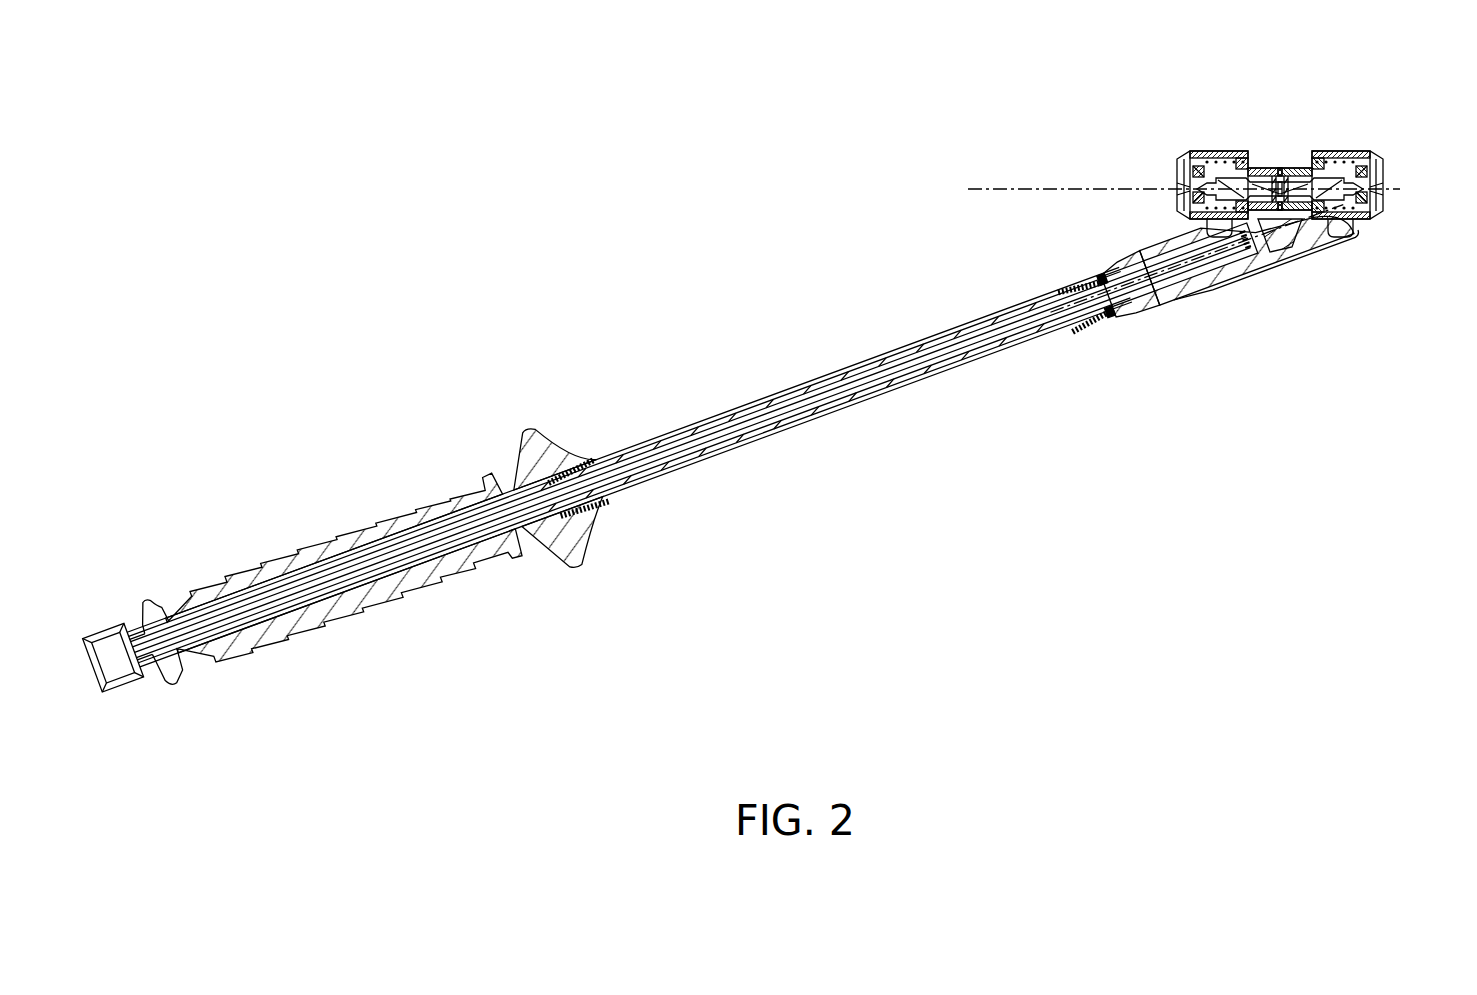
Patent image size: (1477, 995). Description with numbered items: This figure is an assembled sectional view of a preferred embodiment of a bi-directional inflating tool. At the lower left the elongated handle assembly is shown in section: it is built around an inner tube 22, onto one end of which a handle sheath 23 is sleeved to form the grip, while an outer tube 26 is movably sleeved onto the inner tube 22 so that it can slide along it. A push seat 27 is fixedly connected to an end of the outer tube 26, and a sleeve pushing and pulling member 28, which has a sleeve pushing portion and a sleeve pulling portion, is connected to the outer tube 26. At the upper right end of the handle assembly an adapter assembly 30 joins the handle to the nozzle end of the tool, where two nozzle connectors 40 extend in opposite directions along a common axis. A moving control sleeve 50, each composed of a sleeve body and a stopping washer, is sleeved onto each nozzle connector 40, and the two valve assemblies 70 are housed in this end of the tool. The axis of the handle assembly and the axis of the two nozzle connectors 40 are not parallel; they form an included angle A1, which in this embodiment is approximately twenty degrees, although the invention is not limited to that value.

The inner tube 22 is at (1152, 306).
The handle sheath 23 is at (356, 540).
The outer tube 26 is at (933, 393).
The push seat 27 is at (553, 462).
The sleeve pushing and pulling member 28 is at (1230, 288).
The adapter assembly 30 is at (1286, 258).
The nozzle connector 40 is at (1180, 186).
The moving control sleeve 50 is at (1212, 153).
The valve assembly 70 is at (1266, 157).
The included angle A1 is at (986, 205).